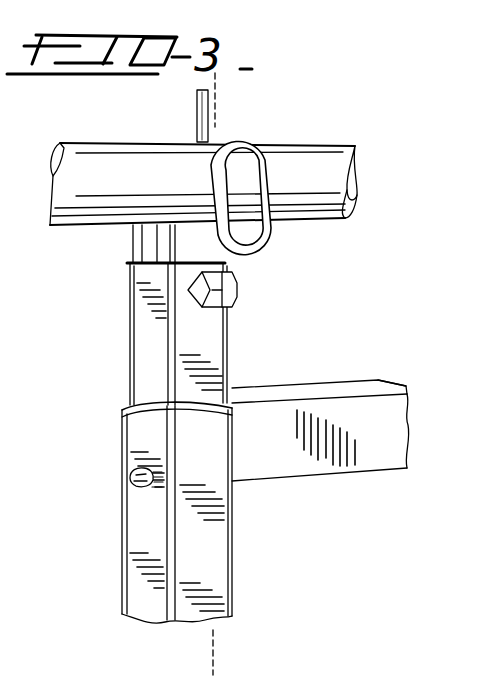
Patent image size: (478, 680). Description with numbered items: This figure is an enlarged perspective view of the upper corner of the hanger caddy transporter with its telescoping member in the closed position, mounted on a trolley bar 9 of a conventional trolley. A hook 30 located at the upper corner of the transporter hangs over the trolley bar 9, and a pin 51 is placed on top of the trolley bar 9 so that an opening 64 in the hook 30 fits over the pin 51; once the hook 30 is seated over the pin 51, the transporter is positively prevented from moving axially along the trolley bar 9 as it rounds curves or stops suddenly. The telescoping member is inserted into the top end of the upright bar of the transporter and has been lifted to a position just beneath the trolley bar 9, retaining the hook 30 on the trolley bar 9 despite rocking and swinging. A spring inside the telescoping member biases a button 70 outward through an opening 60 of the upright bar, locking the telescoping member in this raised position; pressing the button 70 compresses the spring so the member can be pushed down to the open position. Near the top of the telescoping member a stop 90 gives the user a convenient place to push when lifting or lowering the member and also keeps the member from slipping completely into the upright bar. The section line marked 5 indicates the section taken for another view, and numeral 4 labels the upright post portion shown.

The upright post 4 is at (150, 356).
The section line 5- 5 is at (183, 83).
The trolley bar 9 is at (309, 158).
The hook 30 is at (137, 240).
The pin 51 is at (205, 128).
The opening 60 is at (147, 494).
The opening 64 is at (243, 237).
The button 70 is at (129, 478).
The stop 90 is at (229, 290).